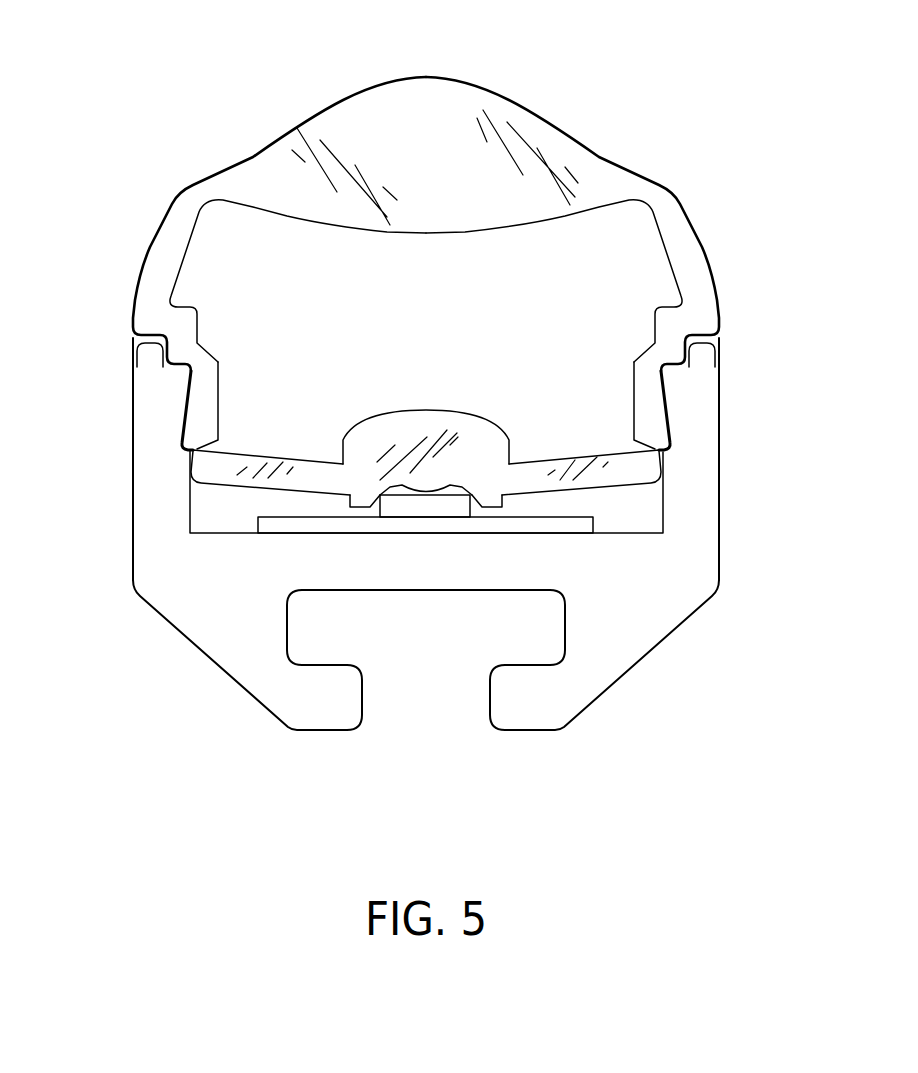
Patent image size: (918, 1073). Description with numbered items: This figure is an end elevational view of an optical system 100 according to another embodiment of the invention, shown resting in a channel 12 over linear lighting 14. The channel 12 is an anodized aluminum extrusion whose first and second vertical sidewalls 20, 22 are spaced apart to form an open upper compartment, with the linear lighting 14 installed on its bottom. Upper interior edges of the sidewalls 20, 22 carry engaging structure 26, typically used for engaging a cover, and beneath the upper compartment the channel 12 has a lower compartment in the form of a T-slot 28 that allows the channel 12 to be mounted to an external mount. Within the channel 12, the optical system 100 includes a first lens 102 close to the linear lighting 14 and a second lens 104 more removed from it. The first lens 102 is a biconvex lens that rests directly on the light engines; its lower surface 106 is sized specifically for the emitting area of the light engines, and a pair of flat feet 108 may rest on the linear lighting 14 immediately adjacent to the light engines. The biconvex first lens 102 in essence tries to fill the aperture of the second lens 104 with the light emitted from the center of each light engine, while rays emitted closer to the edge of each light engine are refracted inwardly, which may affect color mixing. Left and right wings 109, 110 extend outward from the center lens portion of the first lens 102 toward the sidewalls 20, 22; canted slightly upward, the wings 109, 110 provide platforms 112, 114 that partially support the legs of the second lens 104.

The optical system 100 is at (426, 233).
The second lens 104 is at (542, 106).
The first lens 102 is at (392, 404).
The lower surface 106 is at (453, 487).
The flat feet 108 is at (360, 503).
The left wing 109 is at (287, 458).
The right wing 110 is at (570, 460).
The platform 112 is at (197, 447).
The platform 114 is at (654, 449).
The channel 12 is at (424, 565).
The linear lighting 14 is at (250, 525).
The first vertical sidewall 20 is at (150, 418).
The second vertical sidewall 22 is at (700, 447).
The engaging structure 26 is at (163, 356).
The T-slot 28 is at (436, 673).